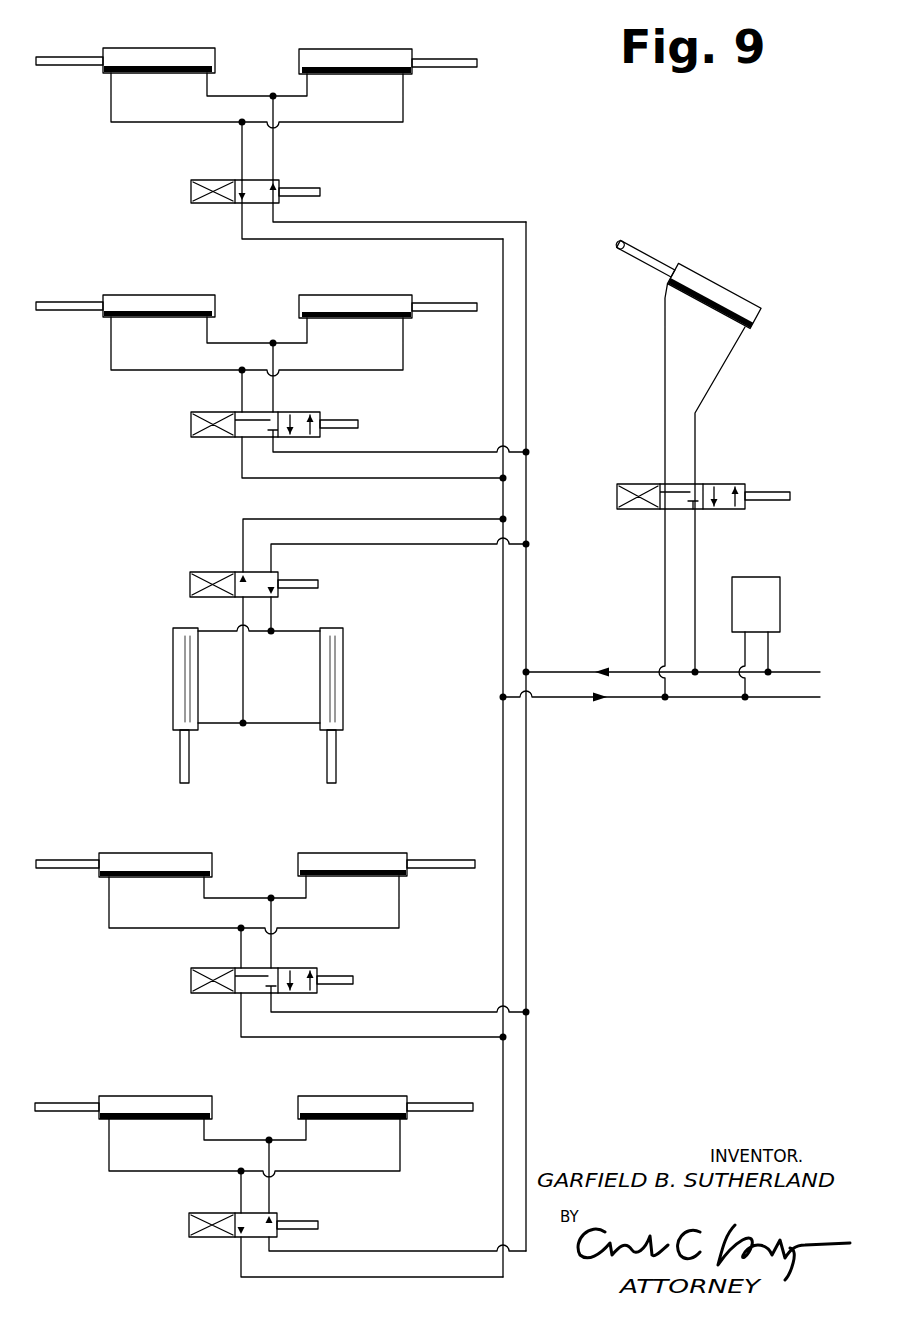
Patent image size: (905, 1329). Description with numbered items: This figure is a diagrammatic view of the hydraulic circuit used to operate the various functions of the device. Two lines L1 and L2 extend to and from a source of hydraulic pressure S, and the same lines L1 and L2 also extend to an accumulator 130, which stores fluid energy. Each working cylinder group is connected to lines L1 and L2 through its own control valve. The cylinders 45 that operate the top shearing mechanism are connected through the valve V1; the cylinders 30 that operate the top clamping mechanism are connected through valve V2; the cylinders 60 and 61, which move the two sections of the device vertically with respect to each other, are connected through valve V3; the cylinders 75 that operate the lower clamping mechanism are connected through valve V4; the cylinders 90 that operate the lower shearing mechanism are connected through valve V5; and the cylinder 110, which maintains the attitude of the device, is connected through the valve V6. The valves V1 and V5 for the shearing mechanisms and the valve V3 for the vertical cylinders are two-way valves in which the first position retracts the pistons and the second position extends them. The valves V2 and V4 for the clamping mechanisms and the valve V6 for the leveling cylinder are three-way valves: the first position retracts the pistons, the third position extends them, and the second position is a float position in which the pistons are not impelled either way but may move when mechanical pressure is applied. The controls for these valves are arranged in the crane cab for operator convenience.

The cylinders 45 is at (163, 48).
The cylinders 30 is at (147, 295).
The cylinder 60 is at (343, 665).
The cylinder 61 is at (173, 665).
The cylinders 75 is at (363, 853).
The cylinders 90 is at (173, 1096).
The cylinder 110 is at (718, 288).
The accumulator 130 is at (780, 610).
The valve V1 is at (191, 190).
The valve V2 is at (321, 433).
The valve V3 is at (190, 585).
The valve V4 is at (191, 980).
The valve V5 is at (325, 1231).
The valve V6 is at (617, 497).
The line L1 is at (797, 672).
The line L2 is at (786, 697).
The source of hydraulic pressure S is at (844, 685).